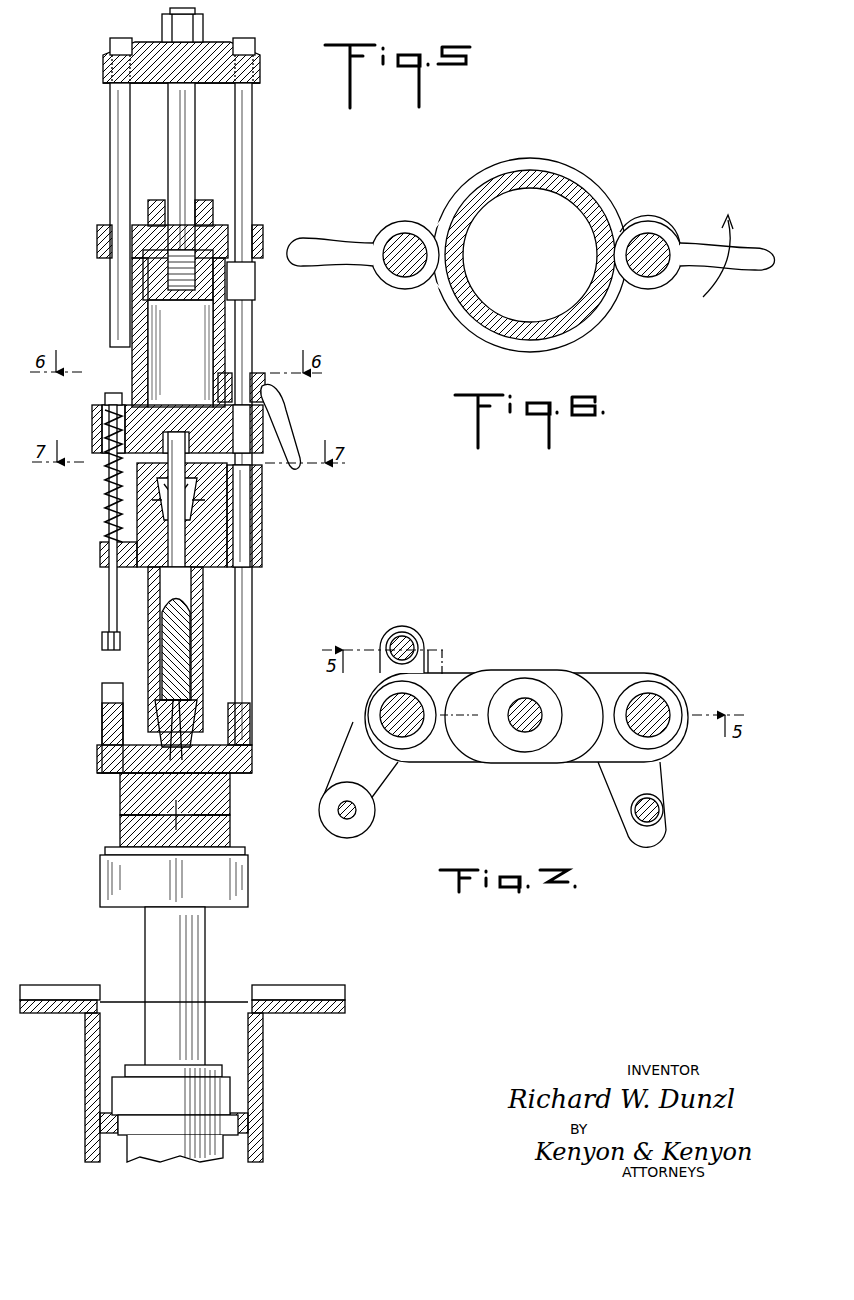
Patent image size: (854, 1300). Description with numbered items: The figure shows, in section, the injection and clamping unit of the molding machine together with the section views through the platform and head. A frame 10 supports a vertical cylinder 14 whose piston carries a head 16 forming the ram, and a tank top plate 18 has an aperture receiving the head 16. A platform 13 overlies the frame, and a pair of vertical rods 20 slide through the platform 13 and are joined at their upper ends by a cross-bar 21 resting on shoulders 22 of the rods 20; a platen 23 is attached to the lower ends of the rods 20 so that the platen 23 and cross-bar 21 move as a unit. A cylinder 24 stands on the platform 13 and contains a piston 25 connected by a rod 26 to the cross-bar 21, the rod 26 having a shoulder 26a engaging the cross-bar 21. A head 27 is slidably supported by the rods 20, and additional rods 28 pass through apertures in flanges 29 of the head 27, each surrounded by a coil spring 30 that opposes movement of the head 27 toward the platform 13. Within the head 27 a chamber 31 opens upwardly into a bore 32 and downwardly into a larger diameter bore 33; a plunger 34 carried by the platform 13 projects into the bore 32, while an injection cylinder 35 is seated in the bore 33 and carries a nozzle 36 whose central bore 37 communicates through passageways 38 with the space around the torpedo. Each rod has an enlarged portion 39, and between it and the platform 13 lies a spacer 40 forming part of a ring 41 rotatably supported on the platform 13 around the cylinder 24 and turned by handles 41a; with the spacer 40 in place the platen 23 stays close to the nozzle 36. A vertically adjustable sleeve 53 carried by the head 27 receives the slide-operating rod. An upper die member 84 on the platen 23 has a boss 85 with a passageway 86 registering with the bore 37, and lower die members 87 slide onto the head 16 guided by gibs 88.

In FIG. 5, the frame 10 is at (85, 1086).
In FIG. 5, the platform 13 is at (92, 422).
In FIG. 5, the vertical cylinder 14 is at (112, 1103).
In FIG. 5, the head 16 is at (110, 890).
In FIG. 5, the top plate 18 is at (55, 1002).
In FIG. 5, the vertical rods 20 is at (110, 172).
In FIG. 6, the vertical rods 20 is at (405, 233).
In FIG. 7, the vertical rods 20 is at (408, 732).
In FIG. 5, the cross-bar 21 is at (255, 70).
In FIG. 5, the shoulders 22 is at (258, 84).
In FIG. 5, the platen 23 is at (124, 776).
In FIG. 5, the cylinder 24 is at (225, 336).
In FIG. 6, the cylinder 24 is at (574, 196).
In FIG. 5, the piston 25 is at (197, 302).
In FIG. 5, the rod 26 is at (180, 174).
In FIG. 5, the shoulder 26a is at (190, 78).
In FIG. 5, the head 27 is at (262, 531).
In FIG. 7, the head 27 is at (620, 680).
In FIG. 5, the additional rods 28 is at (110, 596).
In FIG. 7, the additional rods 28 is at (406, 640).
In FIG. 5, the flanges 29 is at (116, 556).
In FIG. 7, the flanges 29 is at (428, 647).
In FIG. 5, the coil spring 30 is at (108, 470).
In FIG. 7, the coil spring 30 is at (390, 638).
In FIG. 5, the chamber 31 is at (150, 516).
In FIG. 5, the bore 32 is at (146, 483).
In FIG. 5, the larger diameter bore 33 is at (225, 536).
In FIG. 5, the plunger 34 is at (176, 554).
In FIG. 7, the plunger 34 is at (526, 700).
In FIG. 5, the injection cylinder 35 is at (150, 662).
In FIG. 5, the nozzle 36 is at (198, 742).
In FIG. 5, the central bore 37 is at (200, 730).
In FIG. 5, the passageways 38 is at (155, 708).
In FIG. 5, the enlarged portion 39 is at (258, 284).
In FIG. 5, the spacer 40 is at (255, 378).
In FIG. 6, the spacer 40 is at (668, 246).
In FIG. 5, the ring 41 is at (230, 388).
In FIG. 6, the ring 41 is at (615, 218).
In FIG. 5, the handles 41a is at (296, 436).
In FIG. 6, the handles 41a is at (326, 243).
In FIG. 7, the vertically adjustable sleeve 53 is at (347, 820).
In FIG. 5, the first or upper die member 84 is at (232, 814).
In FIG. 5, the boss 85 is at (254, 761).
In FIG. 5, the passageway 86 is at (232, 788).
In FIG. 5, the second or movable die members 87 is at (232, 838).
In FIG. 5, the gibs 88 is at (312, 998).